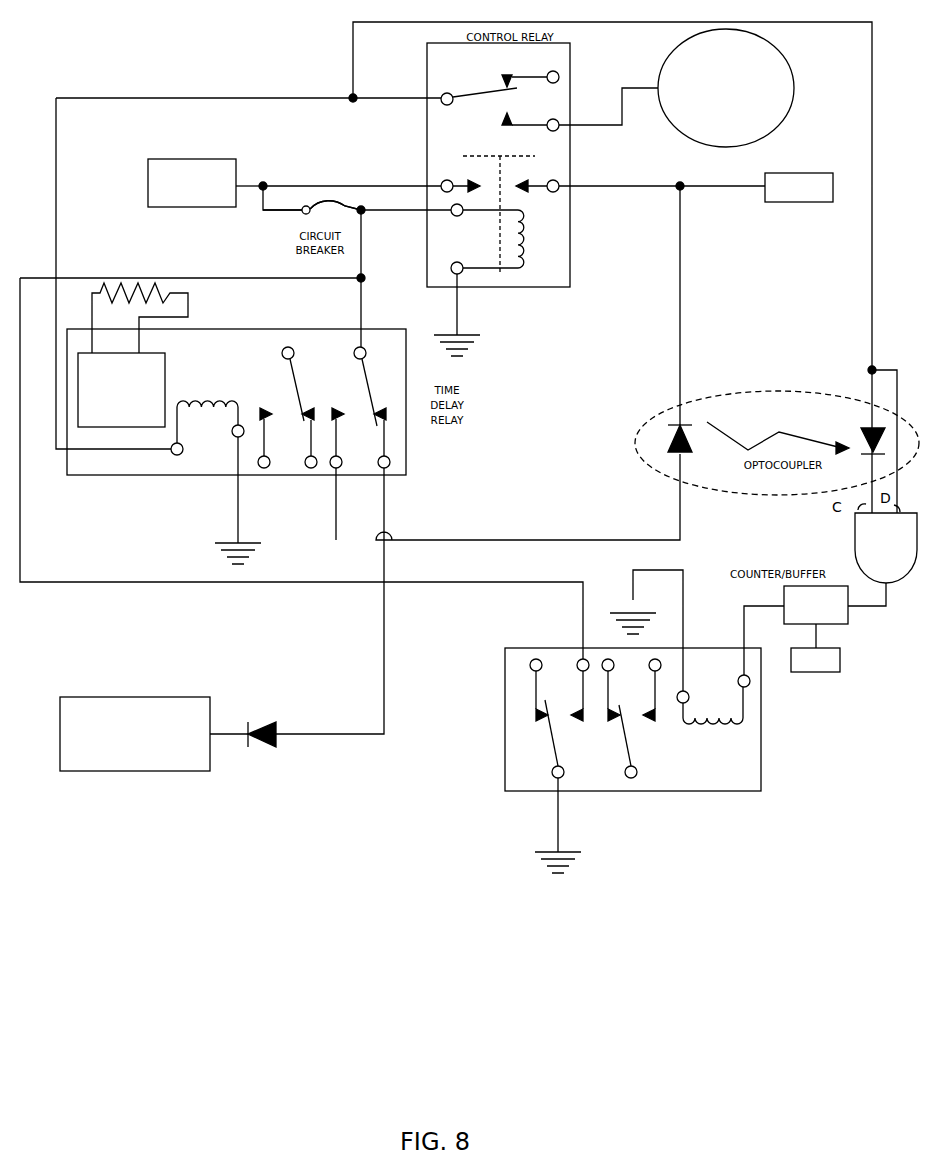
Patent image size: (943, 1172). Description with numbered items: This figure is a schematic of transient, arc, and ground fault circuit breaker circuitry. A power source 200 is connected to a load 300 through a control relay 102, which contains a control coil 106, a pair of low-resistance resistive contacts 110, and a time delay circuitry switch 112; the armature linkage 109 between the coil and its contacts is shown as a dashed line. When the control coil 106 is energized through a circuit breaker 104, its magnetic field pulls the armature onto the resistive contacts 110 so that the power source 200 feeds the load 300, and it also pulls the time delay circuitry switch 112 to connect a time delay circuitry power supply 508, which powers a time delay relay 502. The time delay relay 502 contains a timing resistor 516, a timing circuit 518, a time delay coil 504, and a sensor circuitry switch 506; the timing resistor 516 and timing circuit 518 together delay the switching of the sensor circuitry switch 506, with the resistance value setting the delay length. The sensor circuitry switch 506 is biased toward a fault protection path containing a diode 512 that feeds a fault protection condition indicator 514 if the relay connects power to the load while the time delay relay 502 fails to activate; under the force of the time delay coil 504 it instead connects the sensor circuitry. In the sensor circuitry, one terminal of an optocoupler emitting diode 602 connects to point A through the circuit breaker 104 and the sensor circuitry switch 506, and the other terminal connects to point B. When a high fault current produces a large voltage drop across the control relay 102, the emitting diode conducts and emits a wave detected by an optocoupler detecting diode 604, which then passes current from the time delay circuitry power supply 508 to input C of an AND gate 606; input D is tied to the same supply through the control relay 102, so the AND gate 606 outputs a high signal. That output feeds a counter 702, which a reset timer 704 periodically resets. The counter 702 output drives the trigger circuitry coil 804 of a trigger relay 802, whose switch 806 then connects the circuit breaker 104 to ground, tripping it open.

The control relay 102 is at (571, 62).
The circuit breaker 104 is at (332, 208).
The control coil 106 is at (525, 237).
The relay armature linkage 109 is at (505, 156).
The resistive contacts 110 is at (470, 176).
The time delay circuitry switch 112 is at (470, 93).
The power source 200 is at (183, 160).
The load 300 is at (803, 172).
The time delay relay 502 is at (385, 331).
The time delay coil 504 is at (212, 398).
The sensor circuitry switch 506 is at (370, 381).
The time delay circuitry power supply 508 is at (784, 50).
The diode 512 is at (267, 750).
The fault protection condition indicator 514 is at (146, 696).
The timing resistor 516 is at (135, 279).
The timing circuit 518 is at (165, 353).
The optocoupler emitting diode 602 is at (672, 428).
The optocoupler detecting diode 604 is at (876, 428).
The AND gate 606 is at (851, 543).
The counter 702 is at (850, 616).
The reset timer 704 is at (848, 662).
The trigger relay 802 is at (707, 793).
The trigger circuitry coil 804 is at (693, 733).
The switch 806 is at (557, 735).